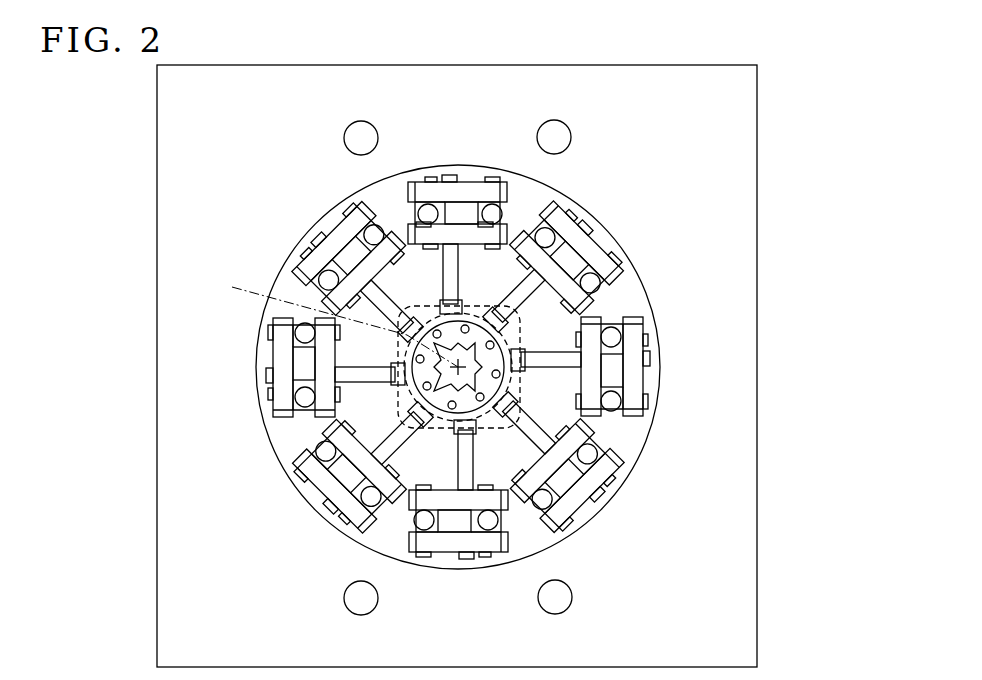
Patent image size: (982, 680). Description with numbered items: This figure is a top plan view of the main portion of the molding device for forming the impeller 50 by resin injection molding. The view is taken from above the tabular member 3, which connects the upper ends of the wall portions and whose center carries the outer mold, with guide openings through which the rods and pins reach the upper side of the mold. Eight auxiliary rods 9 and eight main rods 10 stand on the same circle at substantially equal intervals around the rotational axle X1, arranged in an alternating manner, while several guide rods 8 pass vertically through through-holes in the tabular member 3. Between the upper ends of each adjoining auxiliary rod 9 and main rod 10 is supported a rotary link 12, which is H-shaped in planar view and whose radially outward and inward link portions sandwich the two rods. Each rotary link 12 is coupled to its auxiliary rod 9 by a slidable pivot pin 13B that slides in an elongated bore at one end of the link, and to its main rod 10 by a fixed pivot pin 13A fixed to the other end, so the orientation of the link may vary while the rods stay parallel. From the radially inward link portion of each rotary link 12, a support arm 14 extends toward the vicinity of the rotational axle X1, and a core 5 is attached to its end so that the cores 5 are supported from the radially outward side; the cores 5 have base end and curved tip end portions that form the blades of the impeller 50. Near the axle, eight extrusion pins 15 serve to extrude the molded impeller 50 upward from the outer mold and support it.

The tabular member 3 is at (752, 462).
The core 5 is at (503, 345).
The guide rod 8 is at (344, 140).
The auxiliary rod 9 is at (430, 208).
The main rod 10 is at (317, 242).
The rotary link 12 is at (462, 190).
The fixed pivot pin 13A is at (428, 552).
The slidable pivot pin 13B is at (487, 552).
The support arm 14 is at (382, 368).
The extrusion pin 15 is at (440, 332).
The impeller 50 is at (423, 322).
The rotational axle X1 is at (327, 320).